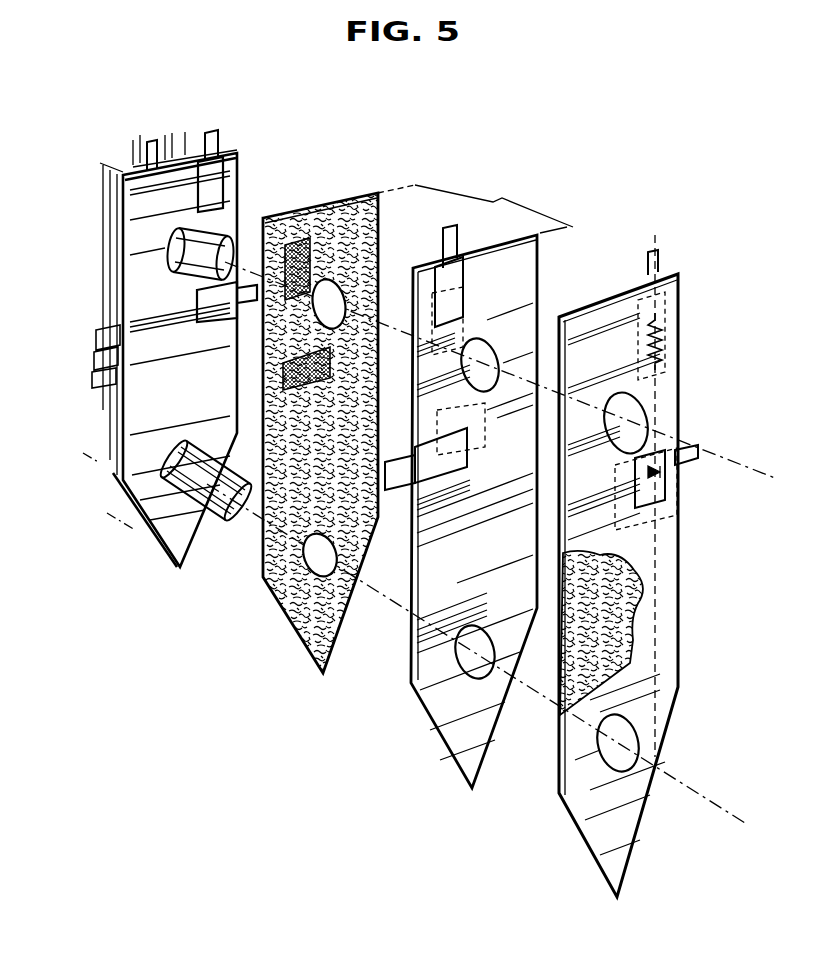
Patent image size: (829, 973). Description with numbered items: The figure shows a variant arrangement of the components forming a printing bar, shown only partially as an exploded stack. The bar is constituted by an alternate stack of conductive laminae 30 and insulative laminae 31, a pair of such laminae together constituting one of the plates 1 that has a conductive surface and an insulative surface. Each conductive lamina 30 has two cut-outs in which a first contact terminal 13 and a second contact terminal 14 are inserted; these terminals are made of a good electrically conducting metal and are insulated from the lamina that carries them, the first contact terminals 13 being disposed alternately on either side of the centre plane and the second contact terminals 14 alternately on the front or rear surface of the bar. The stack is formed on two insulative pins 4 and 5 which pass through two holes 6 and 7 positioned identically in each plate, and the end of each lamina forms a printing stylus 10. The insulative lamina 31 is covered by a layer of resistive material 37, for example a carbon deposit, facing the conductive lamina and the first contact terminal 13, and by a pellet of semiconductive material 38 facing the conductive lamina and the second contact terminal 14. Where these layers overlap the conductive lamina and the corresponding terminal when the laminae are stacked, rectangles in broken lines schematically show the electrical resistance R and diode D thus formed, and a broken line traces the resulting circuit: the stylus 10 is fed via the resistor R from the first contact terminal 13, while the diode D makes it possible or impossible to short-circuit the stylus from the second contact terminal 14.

The plate 1 is at (615, 288).
The insulative pin 4 is at (215, 250).
The insulative pin 5 is at (218, 485).
The hole 6 is at (643, 413).
The hole 7 is at (623, 742).
The printing stylus 10 is at (585, 837).
The first contact terminal 13 is at (452, 277).
The second contact terminal 14 is at (417, 495).
The conductive lamina 30 is at (527, 300).
The insulative lamina 31 is at (372, 213).
The layer of resistive material 37 is at (305, 247).
The layer of semiconductive material 38 is at (303, 392).
The electrical resistance R is at (662, 363).
The diode D is at (660, 477).